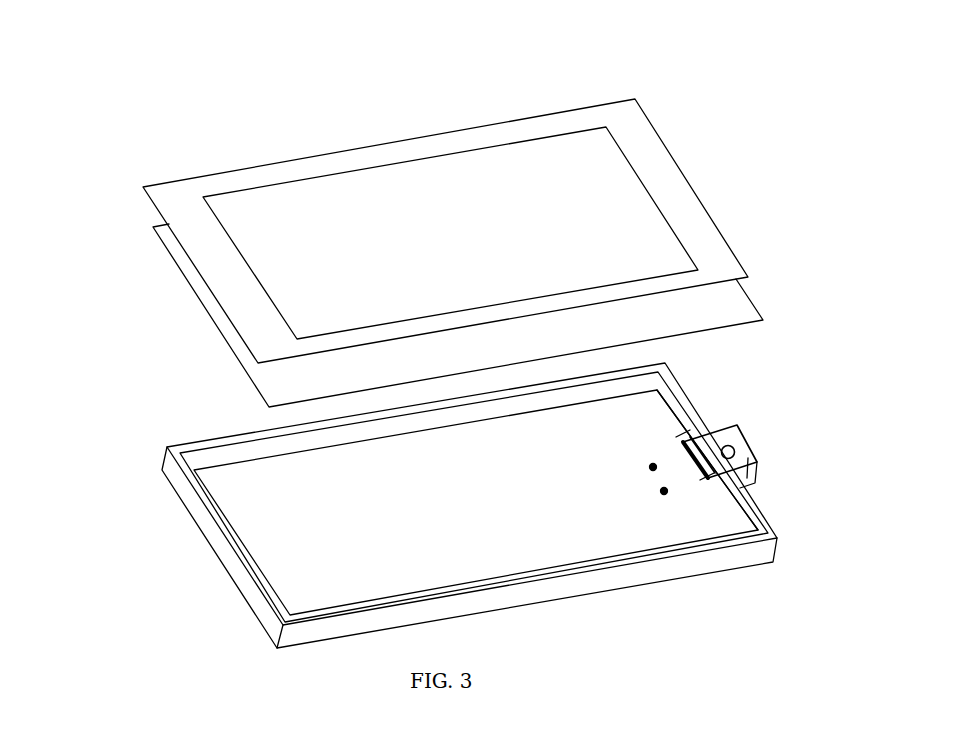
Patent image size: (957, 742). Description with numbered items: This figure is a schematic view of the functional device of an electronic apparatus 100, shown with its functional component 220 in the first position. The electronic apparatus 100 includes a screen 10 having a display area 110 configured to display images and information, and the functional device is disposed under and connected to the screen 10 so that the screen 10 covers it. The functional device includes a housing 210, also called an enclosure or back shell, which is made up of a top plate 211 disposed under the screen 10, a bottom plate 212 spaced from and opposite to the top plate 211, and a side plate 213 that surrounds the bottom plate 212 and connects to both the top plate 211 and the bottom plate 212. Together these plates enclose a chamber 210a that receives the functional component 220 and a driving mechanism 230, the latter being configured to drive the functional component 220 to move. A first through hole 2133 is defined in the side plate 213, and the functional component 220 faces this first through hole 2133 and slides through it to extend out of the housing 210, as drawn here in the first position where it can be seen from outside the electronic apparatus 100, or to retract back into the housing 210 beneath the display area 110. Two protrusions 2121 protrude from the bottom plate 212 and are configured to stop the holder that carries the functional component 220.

The electronic apparatus 100 is at (165, 130).
The screen 10 is at (708, 250).
The display area 110 is at (592, 212).
The housing 210 is at (514, 436).
The top plate 211 is at (737, 310).
The bottom plate 212 is at (628, 412).
The side plate 213 is at (683, 430).
The first through hole 2133 is at (697, 440).
The functional component 220 is at (750, 443).
The driving mechanism 230 is at (757, 461).
The chamber 210a is at (705, 515).
The protrusion 2121 is at (664, 496).